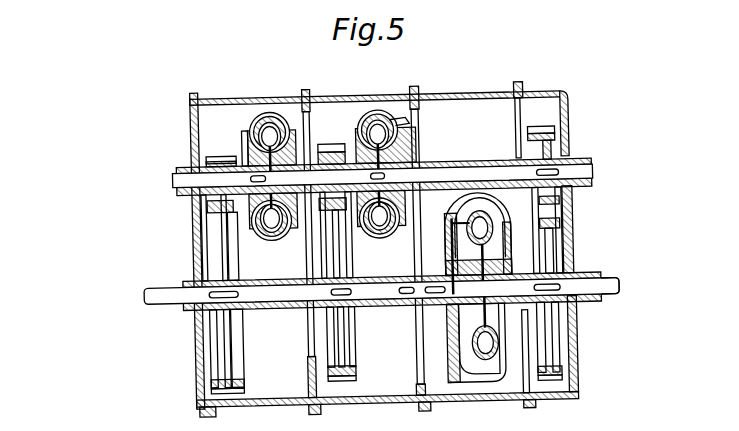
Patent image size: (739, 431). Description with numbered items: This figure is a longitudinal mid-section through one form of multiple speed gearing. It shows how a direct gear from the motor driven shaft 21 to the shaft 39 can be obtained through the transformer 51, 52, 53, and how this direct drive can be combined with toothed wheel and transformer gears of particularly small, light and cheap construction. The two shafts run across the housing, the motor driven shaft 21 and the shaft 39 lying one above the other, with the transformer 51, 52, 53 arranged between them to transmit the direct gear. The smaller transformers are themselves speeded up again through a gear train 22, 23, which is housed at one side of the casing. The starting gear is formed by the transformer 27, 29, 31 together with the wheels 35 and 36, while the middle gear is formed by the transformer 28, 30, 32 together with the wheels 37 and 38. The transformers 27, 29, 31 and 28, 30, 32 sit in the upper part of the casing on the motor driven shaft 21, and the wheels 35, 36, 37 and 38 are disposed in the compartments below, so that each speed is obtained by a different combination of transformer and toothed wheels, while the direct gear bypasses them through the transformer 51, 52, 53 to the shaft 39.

The motor driven shaft 21 is at (597, 288).
The gear train 22 is at (573, 238).
The gear train 23 is at (575, 201).
The transformer 27 is at (264, 110).
The transformer 28 is at (397, 150).
The transformer 29 is at (250, 140).
The transformer 30 is at (372, 100).
The transformer 31 is at (283, 148).
The transformer 32 is at (380, 109).
The wheel 35 is at (196, 196).
The wheel 36 is at (220, 229).
The wheel 37 is at (362, 236).
The wheel 38 is at (335, 345).
The shaft 39 is at (146, 289).
The transformer 51 is at (470, 326).
The transformer 52 is at (484, 374).
The transformer 53 is at (493, 363).